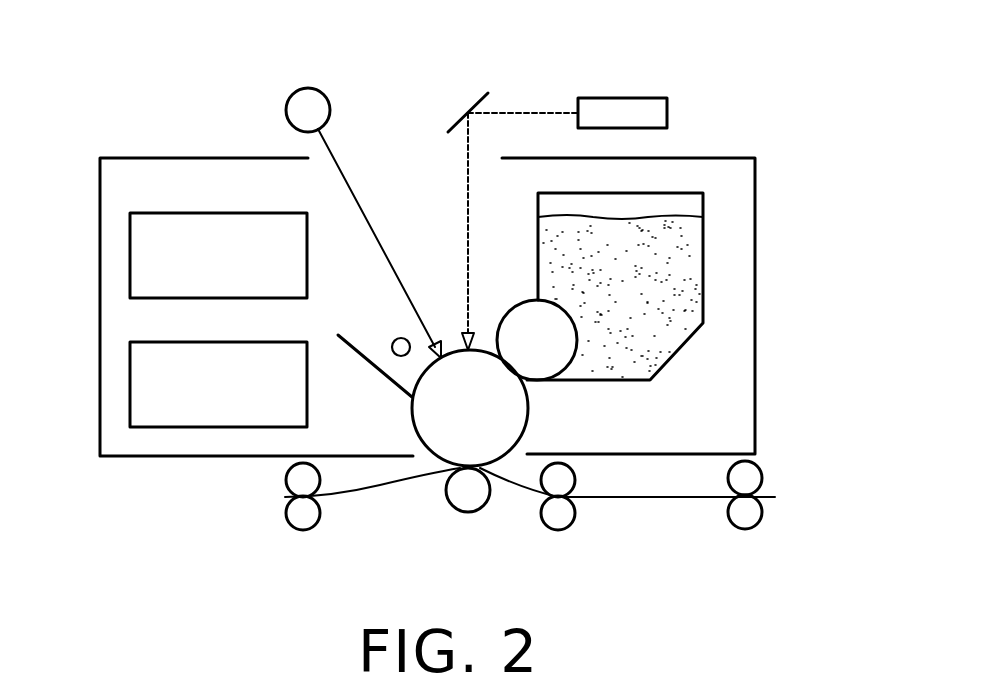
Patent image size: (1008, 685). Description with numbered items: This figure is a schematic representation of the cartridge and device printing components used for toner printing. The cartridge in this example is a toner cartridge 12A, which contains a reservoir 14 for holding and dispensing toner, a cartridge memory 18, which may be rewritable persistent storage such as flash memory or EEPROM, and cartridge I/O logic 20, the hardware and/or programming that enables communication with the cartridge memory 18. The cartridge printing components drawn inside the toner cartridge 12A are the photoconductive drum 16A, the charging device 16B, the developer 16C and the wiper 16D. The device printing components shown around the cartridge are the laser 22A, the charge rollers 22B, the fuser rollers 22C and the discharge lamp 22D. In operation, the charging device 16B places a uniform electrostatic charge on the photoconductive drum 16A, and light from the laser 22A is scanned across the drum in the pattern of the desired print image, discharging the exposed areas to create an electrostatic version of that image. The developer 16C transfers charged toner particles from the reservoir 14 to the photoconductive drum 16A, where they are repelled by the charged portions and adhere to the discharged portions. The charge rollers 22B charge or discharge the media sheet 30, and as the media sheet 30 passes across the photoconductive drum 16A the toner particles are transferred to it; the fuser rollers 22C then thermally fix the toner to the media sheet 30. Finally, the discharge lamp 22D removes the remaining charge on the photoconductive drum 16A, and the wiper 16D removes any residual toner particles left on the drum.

The toner cartridge 12A is at (745, 400).
The reservoir 14 is at (705, 273).
The photoconductive drum 16A is at (425, 434).
The charging device 16B is at (398, 338).
The developer 16C is at (516, 318).
The wiper 16D is at (388, 381).
The cartridge memory 18 is at (188, 347).
The cartridge I/O logic 20 is at (187, 217).
The laser 22A is at (617, 105).
The charge rollers 22B is at (565, 520).
The fuser rollers 22C is at (310, 520).
The discharge lamp 22D is at (303, 97).
The media sheet 30 is at (633, 495).